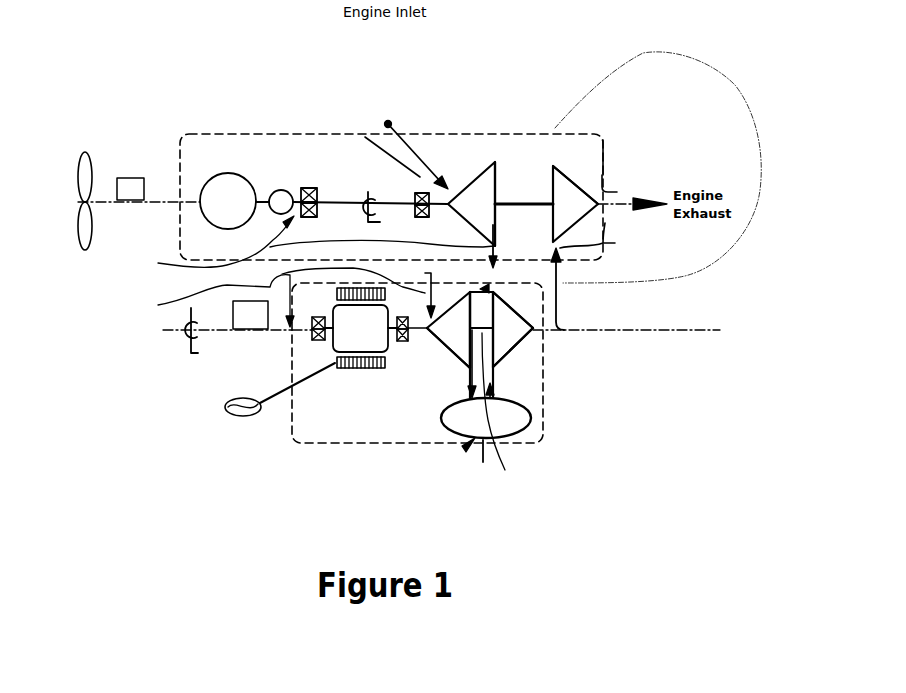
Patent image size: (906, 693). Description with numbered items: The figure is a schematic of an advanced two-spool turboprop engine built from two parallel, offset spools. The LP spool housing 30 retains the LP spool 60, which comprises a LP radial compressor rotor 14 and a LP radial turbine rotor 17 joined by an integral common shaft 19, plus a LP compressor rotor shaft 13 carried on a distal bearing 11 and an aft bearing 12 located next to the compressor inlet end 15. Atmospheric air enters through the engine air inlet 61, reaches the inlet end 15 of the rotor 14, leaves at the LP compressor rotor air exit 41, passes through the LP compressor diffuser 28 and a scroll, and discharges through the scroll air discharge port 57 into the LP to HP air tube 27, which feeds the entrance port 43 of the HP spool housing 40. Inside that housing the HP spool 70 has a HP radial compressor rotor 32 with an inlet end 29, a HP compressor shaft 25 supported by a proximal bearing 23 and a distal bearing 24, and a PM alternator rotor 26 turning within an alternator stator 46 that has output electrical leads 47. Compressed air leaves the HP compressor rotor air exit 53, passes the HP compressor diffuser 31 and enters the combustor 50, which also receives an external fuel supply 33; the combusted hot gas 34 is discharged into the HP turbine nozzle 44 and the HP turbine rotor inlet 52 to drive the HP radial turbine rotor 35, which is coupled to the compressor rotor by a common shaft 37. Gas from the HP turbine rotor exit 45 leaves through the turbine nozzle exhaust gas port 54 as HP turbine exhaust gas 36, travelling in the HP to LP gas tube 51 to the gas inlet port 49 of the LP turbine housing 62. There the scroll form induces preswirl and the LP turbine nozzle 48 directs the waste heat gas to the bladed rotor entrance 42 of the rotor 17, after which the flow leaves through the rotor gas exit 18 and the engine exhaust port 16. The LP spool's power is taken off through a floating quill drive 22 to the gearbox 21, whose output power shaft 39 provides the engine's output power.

The output power shaft 39 is at (167, 201).
The gearbox 21 is at (200, 193).
The quill drive 22 is at (273, 193).
The LP spool housing 30 is at (273, 128).
The distal bearing 11 is at (311, 193).
The LP compressor rotor shaft 13 is at (305, 187).
The aft bearing 12 is at (350, 200).
The engine air inlet 61 is at (408, 137).
The LP compressor rotor inlet end 15 is at (458, 183).
The LP radial compressor rotor 14 is at (482, 193).
The LP compressor rotor air exit 41 is at (493, 155).
The integral common shaft 19 is at (527, 202).
The LP radial turbine rotor 17 is at (560, 193).
The LP turbine rotor gas inlet 42 is at (552, 157).
The engine exhaust port 16 is at (617, 192).
The LP turbine rotor gas exit 18 is at (603, 170).
The LP turbine nozzle 48 is at (615, 243).
The HP exhaust gas inlet port 49 is at (563, 268).
The LP turbine housing 62 is at (658, 167).
The LP spool 60 is at (276, 244).
The HP spool 70 is at (241, 297).
The LP compressor scroll air discharge port 57 is at (487, 266).
The LP compressor diffuser 28 is at (497, 263).
The HP turbine nozzle exhaust gas port 54 is at (556, 337).
The HP spool housing 40 is at (283, 450).
The distal bearing 24 is at (378, 366).
The proximal bearing 23 is at (311, 336).
The HP compressor shaft 25 is at (316, 344).
The PM alternator rotor 26 is at (322, 350).
The HP compressor rotor inlet end 29 is at (398, 349).
The HP compressor diffuser 31 is at (466, 370).
The HP radial compressor rotor 32 is at (455, 343).
The HP compressor rotor air exit 53 is at (467, 369).
The HP spool housing entrance port 43 is at (418, 282).
The LP to HP air tube 27 is at (423, 290).
The HP turbine rotor inlet 52 is at (489, 289).
The HP to LP gas tube 51 is at (560, 294).
The HP radial turbine rotor 35 is at (513, 340).
The HP turbine rotor gas exit 45 is at (530, 335).
The HP turbine nozzle 44 is at (498, 370).
The HP turbine exhaust gas 36 is at (547, 333).
The combusted hot gas 34 is at (500, 415).
The external fuel supply 33 is at (483, 460).
The common shaft 37 is at (502, 409).
The combustor 50 is at (466, 448).
The output electrical leads 47 is at (232, 417).
The alternator stator 46 is at (360, 370).